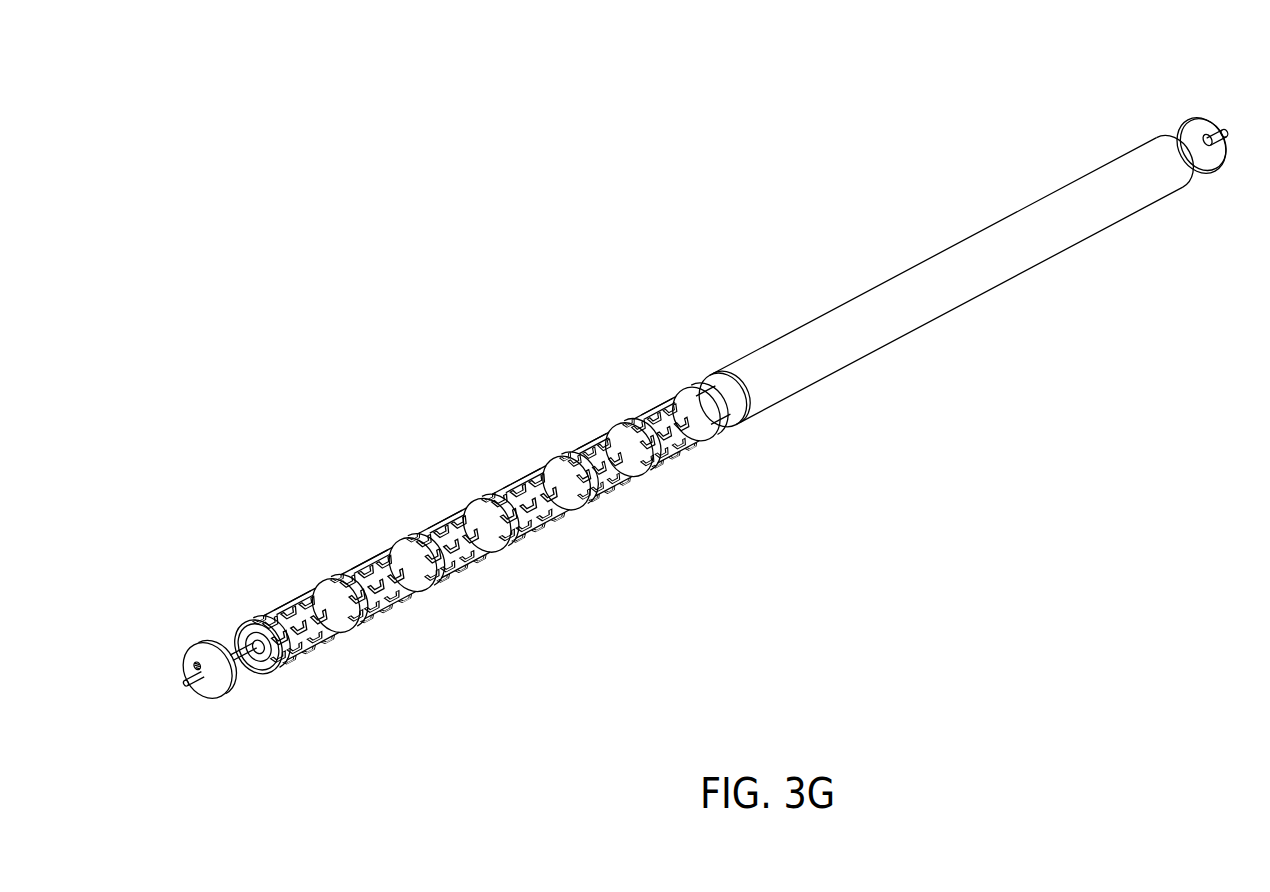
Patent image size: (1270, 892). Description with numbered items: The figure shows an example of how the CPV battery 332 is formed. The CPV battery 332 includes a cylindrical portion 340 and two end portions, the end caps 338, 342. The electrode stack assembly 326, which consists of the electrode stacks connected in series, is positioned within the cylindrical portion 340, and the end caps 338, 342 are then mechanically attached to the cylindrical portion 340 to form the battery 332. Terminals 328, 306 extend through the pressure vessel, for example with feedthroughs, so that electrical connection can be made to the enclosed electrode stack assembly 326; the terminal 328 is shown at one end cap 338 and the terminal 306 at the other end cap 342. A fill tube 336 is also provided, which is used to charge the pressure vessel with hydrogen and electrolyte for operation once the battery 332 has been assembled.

The CPV battery 332 is at (643, 294).
The electrode stack assembly 326 is at (530, 478).
The cylindrical portion 340 is at (840, 338).
The fill tube 336 is at (193, 657).
The end cap 338 is at (222, 687).
The terminal 328 is at (185, 688).
The end cap 342 is at (1220, 173).
The terminal 306 is at (1215, 130).